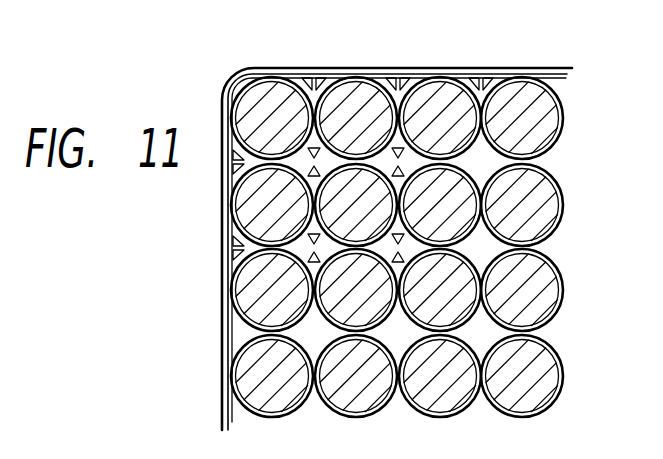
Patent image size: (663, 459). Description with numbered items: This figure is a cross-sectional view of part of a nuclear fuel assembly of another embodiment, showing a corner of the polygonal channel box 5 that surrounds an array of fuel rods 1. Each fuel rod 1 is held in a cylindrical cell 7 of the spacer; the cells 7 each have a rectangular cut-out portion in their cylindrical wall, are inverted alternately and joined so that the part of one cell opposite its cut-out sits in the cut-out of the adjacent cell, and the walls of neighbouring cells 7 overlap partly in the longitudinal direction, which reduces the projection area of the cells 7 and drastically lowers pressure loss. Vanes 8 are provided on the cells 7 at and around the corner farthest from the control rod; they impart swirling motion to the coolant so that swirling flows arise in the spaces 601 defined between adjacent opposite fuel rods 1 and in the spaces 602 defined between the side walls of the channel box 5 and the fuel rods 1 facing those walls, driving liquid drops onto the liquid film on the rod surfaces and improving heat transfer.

The fuel rod 1 is at (428, 86).
The channel box 5 is at (485, 69).
The cylindrical cell 7 is at (372, 84).
The vane 8 is at (388, 83).
The space defined by adjacent opposite fuel rods 601 is at (305, 166).
The space defined by the channel box side walls and the fuel rods 602 is at (314, 85).